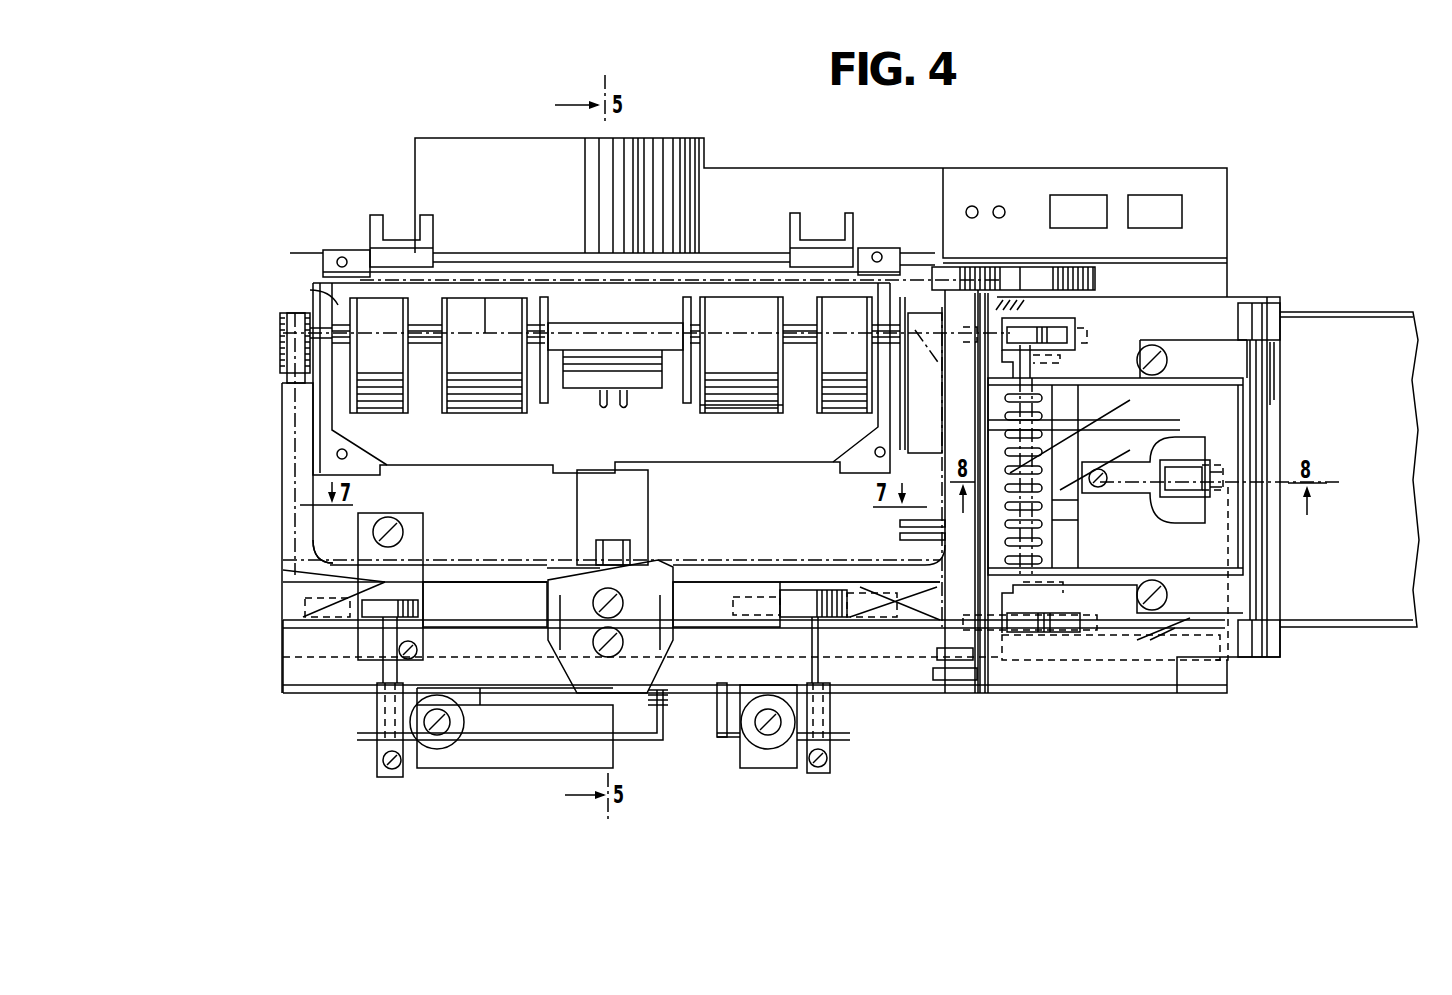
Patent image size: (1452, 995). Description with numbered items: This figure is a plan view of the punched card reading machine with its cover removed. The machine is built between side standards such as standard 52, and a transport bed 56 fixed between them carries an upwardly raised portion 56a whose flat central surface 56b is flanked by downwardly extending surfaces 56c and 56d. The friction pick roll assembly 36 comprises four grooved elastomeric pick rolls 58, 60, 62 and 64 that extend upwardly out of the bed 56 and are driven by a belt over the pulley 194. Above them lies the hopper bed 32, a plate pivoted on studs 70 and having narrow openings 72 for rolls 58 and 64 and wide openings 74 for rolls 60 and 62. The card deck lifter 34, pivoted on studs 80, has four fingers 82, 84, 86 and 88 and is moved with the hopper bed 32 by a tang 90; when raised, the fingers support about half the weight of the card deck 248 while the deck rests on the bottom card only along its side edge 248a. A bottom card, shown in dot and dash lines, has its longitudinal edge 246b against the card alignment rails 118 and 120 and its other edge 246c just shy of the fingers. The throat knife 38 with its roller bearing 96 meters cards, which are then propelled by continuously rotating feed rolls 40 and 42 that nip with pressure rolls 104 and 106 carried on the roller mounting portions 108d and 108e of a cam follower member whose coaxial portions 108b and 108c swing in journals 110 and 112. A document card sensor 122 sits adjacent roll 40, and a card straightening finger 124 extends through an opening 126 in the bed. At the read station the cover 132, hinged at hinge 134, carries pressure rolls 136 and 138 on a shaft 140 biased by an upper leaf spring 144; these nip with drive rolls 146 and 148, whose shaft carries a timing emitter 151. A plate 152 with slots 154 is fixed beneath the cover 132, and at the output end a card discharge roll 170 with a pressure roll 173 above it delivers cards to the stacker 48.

The hopper bed 32 is at (765, 442).
The card deck lifter 34 is at (870, 462).
The friction pick roll assembly 36 is at (712, 412).
The throat knife 38 is at (680, 597).
The feed roll 40 is at (345, 598).
The feed roll 42 is at (892, 600).
The stacker 48 is at (1347, 625).
The standard 52 is at (724, 255).
The transport bed 56 is at (504, 517).
The upwardly raised portion 56a is at (720, 575).
The flat central surface 56b is at (535, 595).
The downwardly extending surface 56c is at (856, 590).
The downwardly extending surface 56d is at (350, 600).
The pick roll 58 is at (380, 400).
The pick roll 60 is at (474, 405).
The pick roll 62 is at (750, 405).
The pick roll 64 is at (838, 405).
The stud 70 is at (342, 257).
The opening 72 is at (410, 395).
The opening 74 is at (527, 395).
The stud 80 is at (337, 453).
The finger 82 is at (312, 290).
The finger 84 is at (546, 303).
The finger 86 is at (683, 303).
The finger 88 is at (940, 312).
The tang 90 is at (610, 390).
The roller bearing 96 is at (626, 560).
The pressure roll 104 is at (420, 606).
The pressure roll 106 is at (800, 604).
The coaxially extending portion 108b is at (543, 745).
The coaxially extending portion 108c is at (730, 737).
The roller mounting portion 108d is at (385, 655).
The roller mounting portion 108e is at (820, 660).
The journal 110 is at (475, 757).
The journal 112 is at (768, 760).
The card alignment rail 118 is at (528, 625).
The card alignment rail 120 is at (687, 624).
The document card sensor 122 is at (420, 556).
The card straightening finger 124 is at (900, 523).
The opening 126 is at (900, 538).
The cover 132 is at (1170, 383).
The hinge 134 is at (968, 688).
The pressure roll 136 is at (1020, 632).
The pressure roll 138 is at (1035, 330).
The shaft 140 is at (1040, 478).
The upper leaf spring 144 is at (1103, 600).
The drive roll 146 is at (1050, 598).
The drive roll 148 is at (1080, 338).
The opto/electronic timing emitter 151 is at (1023, 278).
The plate 152 is at (1045, 413).
The slot 154 is at (1042, 522).
The card discharge roll 170 is at (1258, 463).
The pressure roll 173 is at (1210, 487).
The pulley 194 is at (280, 328).
The longitudinal edge 246b is at (702, 640).
The longitudinal edge 246c is at (485, 330).
The deck 248 is at (298, 470).
The side edge 248a is at (283, 565).